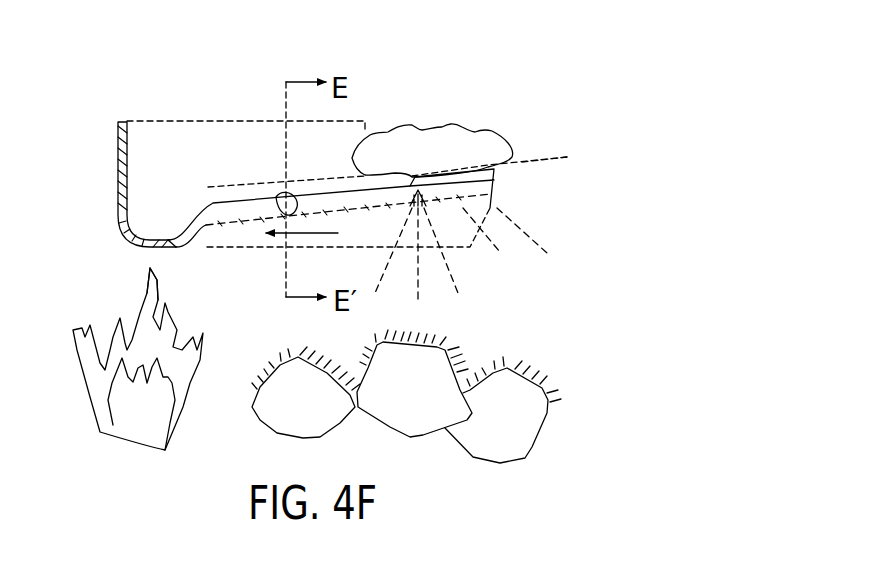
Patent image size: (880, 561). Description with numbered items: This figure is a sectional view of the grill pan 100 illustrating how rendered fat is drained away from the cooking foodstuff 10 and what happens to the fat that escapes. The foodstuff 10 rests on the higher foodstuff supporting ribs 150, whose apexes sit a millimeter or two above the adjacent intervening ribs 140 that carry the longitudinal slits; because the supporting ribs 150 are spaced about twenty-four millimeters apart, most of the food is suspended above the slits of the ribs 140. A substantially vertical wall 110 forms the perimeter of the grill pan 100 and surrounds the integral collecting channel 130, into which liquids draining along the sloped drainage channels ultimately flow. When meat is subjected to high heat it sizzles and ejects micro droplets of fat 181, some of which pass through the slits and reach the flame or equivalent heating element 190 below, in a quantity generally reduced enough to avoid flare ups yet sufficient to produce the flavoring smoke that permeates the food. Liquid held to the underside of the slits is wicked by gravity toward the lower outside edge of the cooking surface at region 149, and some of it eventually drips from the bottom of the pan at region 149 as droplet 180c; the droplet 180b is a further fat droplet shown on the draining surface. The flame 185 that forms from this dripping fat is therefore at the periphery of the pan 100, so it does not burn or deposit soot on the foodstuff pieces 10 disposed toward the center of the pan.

The foodstuff 10 is at (440, 160).
The grill pan 100 is at (454, 89).
The vertical wall 110 is at (117, 138).
The collecting channel 130 is at (145, 226).
The intervening rib 140 is at (494, 178).
The lower outside edge region 149 is at (190, 242).
The foodstuff supporting rib 150 is at (535, 157).
The bubble / inclusion 180b is at (278, 196).
The droplet 180c is at (137, 290).
The micro droplets of fat 181 is at (538, 275).
The flame 185 is at (153, 419).
The heating element 190 is at (428, 401).